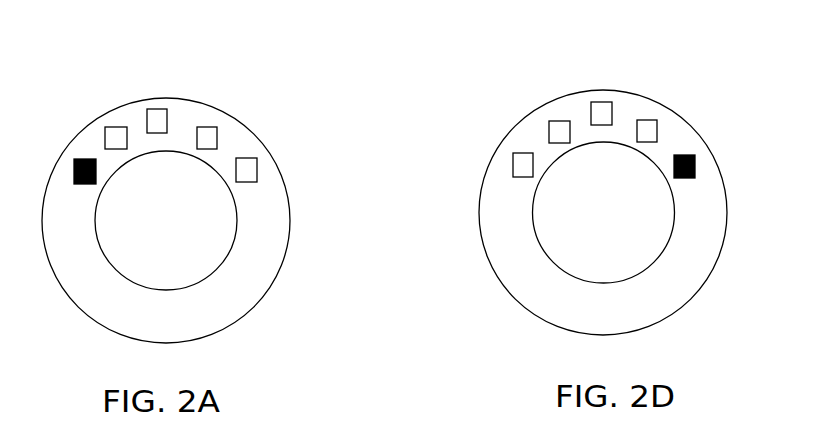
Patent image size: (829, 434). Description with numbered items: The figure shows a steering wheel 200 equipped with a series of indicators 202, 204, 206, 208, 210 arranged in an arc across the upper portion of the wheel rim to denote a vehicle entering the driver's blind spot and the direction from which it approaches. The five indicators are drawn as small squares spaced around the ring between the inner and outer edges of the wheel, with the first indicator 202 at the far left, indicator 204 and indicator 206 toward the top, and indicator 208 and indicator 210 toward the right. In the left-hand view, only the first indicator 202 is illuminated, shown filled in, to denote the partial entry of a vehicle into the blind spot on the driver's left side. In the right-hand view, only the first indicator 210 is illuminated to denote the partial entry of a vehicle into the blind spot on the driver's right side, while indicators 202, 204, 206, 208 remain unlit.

In FIG. 2A, the steering wheel 200 is at (287, 243).
In FIG. 2D, the steering wheel 200 is at (481, 233).
In FIG. 2A, the first indicator 202 is at (77, 160).
In FIG. 2A, the indicator 204 is at (117, 127).
In FIG. 2A, the indicator 206 is at (165, 109).
In FIG. 2A, the indicator 208 is at (210, 128).
In FIG. 2A, the first indicator 210 is at (254, 158).
In FIG. 2D, the first indicator 210 is at (678, 155).